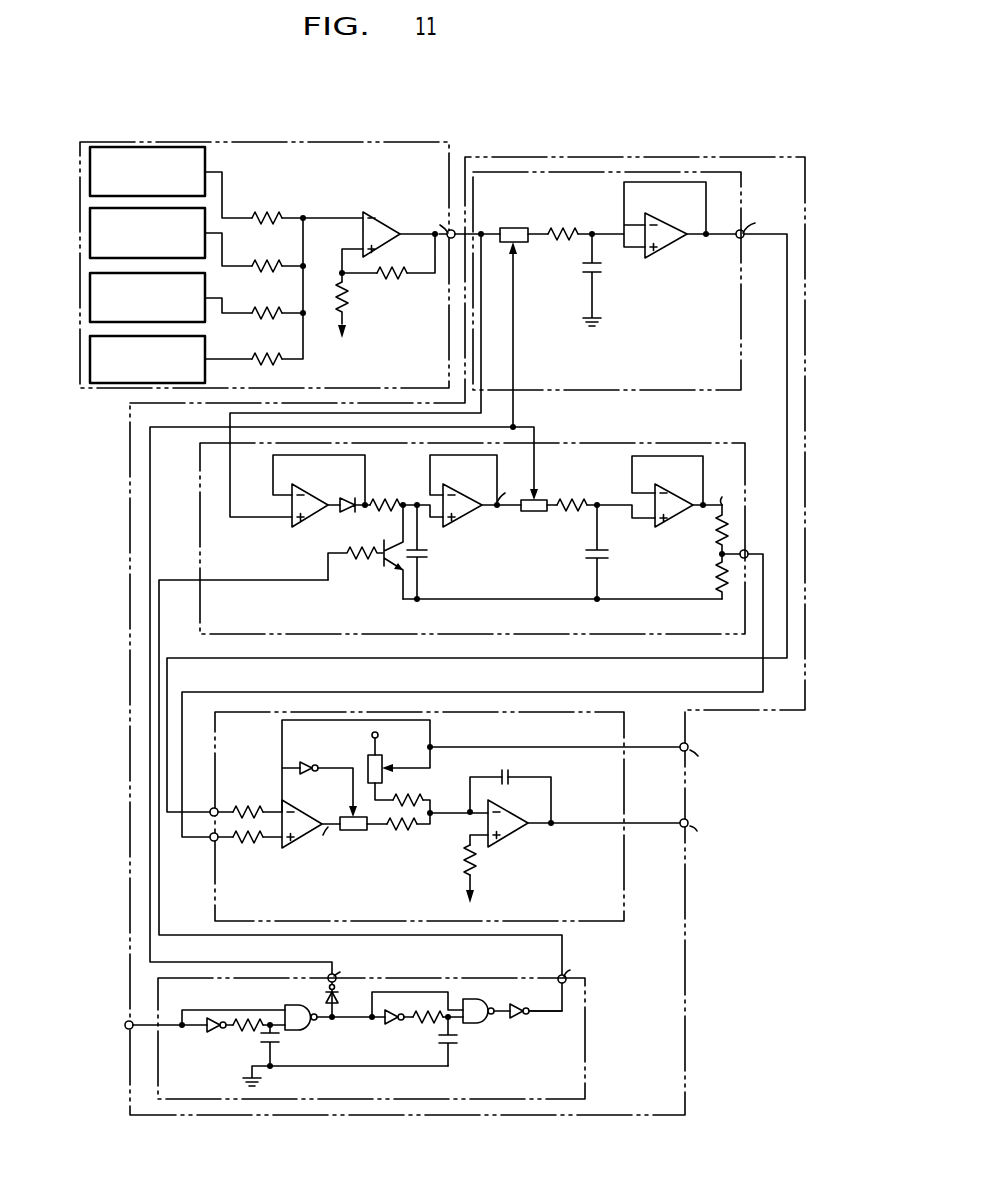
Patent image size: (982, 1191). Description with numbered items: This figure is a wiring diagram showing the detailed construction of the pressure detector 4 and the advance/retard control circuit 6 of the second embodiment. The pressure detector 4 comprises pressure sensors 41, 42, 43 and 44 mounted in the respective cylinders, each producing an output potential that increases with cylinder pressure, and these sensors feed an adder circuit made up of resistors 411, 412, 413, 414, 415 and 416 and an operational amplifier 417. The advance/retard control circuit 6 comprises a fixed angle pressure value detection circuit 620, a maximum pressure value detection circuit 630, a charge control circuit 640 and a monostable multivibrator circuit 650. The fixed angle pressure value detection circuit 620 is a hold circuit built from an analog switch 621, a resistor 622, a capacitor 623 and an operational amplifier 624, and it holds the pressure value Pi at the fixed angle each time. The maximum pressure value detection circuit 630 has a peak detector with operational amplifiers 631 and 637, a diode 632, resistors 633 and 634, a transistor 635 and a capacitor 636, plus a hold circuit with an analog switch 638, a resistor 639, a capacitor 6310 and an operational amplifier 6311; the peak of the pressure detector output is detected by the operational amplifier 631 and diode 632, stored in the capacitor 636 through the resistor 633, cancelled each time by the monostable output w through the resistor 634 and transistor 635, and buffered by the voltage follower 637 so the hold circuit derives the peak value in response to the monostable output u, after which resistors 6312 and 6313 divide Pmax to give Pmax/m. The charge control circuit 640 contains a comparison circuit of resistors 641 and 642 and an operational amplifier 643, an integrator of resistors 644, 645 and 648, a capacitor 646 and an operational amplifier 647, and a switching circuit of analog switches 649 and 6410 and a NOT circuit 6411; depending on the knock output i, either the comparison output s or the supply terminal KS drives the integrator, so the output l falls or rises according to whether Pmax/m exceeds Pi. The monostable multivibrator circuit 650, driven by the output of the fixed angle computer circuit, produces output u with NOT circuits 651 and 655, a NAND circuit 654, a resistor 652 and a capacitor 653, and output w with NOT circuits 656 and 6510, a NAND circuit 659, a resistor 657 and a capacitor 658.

The pressure detector 4 is at (305, 142).
The pressure sensor 41 is at (90, 170).
The pressure sensor 42 is at (90, 234).
The pressure sensor 43 is at (90, 298).
The pressure sensor 44 is at (90, 360).
The resistor 411 is at (268, 215).
The resistor 412 is at (268, 261).
The resistor 413 is at (268, 308).
The resistor 414 is at (268, 354).
The resistor 415 is at (342, 290).
The resistor 416 is at (392, 272).
The operational amplifier 417 is at (382, 229).
The advance/retard control circuit 6 is at (515, 157).
The fixed angle pressure value detection circuit 620 is at (655, 172).
The analog switch 621 is at (510, 228).
The resistor 622 is at (562, 232).
The capacitor 623 is at (583, 268).
The operational amplifier 624 is at (674, 254).
The maximum pressure value detection circuit 630 is at (200, 537).
The operational amplifier 631 is at (292, 505).
The diode 632 is at (348, 498).
The resistor 633 is at (385, 500).
The resistor 634 is at (362, 553).
The transistor 635 is at (388, 566).
The capacitor 636 is at (428, 554).
The operational amplifier 637 is at (468, 498).
The analog switch 638 is at (535, 512).
The resistor 639 is at (573, 502).
The capacitor 6310 is at (587, 555).
The operational amplifier 6311 is at (674, 523).
The resistor 6312 is at (726, 533).
The resistor 6313 is at (716, 579).
The charge control circuit 640 is at (625, 857).
The resistor 641 is at (248, 808).
The resistor 642 is at (248, 843).
The operational amplifier 643 is at (300, 850).
The resistor 644 is at (410, 830).
The resistor 645 is at (463, 873).
The capacitor 646 is at (516, 760).
The operational amplifier 647 is at (518, 833).
The resistor 648 is at (398, 799).
The analog switch 649 is at (355, 830).
The analog switch 6410 is at (366, 765).
The NOT circuit 6411 is at (312, 773).
The monostable multivibrator circuit 650 is at (263, 1099).
The NOT circuit 651 is at (215, 1030).
The resistor 652 is at (248, 1018).
The capacitor 653 is at (262, 1040).
The NAND circuit 654 is at (296, 1030).
The NOT circuit 655 is at (340, 993).
The NOT circuit 656 is at (392, 1027).
The resistor 657 is at (425, 1023).
The capacitor 658 is at (457, 1038).
The NAND circuit 659 is at (477, 999).
The NOT circuit 6510 is at (518, 1017).